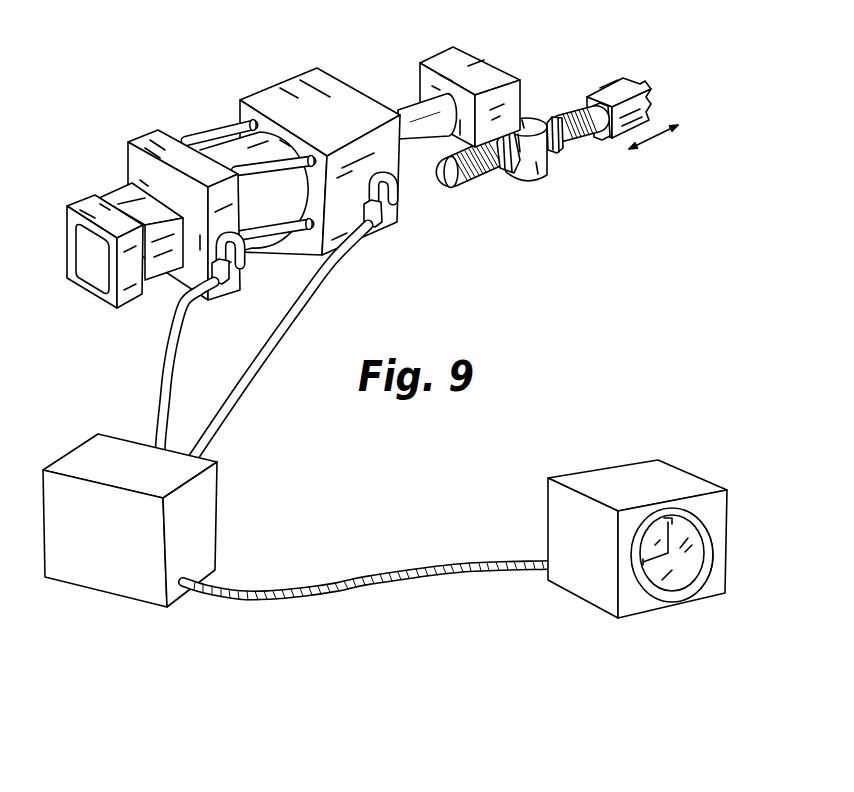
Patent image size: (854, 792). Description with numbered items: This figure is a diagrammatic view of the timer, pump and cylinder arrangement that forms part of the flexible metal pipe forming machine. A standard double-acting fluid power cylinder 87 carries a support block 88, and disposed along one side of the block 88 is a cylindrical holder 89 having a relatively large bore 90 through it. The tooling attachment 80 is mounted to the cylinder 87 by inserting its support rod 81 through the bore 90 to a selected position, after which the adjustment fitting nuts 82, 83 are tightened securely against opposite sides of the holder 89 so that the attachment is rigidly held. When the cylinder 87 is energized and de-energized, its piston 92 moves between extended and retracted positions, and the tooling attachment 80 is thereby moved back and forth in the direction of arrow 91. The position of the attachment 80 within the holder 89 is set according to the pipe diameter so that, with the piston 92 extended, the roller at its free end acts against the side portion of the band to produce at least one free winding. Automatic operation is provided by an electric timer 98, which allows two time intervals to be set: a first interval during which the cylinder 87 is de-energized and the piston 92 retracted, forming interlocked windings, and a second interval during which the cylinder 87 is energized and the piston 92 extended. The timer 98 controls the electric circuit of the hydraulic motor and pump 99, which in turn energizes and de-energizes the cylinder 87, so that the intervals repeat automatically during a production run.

The tooling attachment 80 is at (640, 76).
The support rod 81 is at (405, 236).
The adjustment fitting nut 82 is at (505, 176).
The adjustment fitting nut 83 is at (565, 149).
The double-acting fluid power cylinder 87 is at (228, 86).
The support block 88 is at (503, 72).
The cylindrical holder 89 is at (543, 178).
The bore 90 is at (497, 172).
The arrow 91 is at (653, 143).
The piston 92 is at (413, 105).
The electric timer 98 is at (688, 473).
The hydraulic motor and pump 99 is at (218, 495).